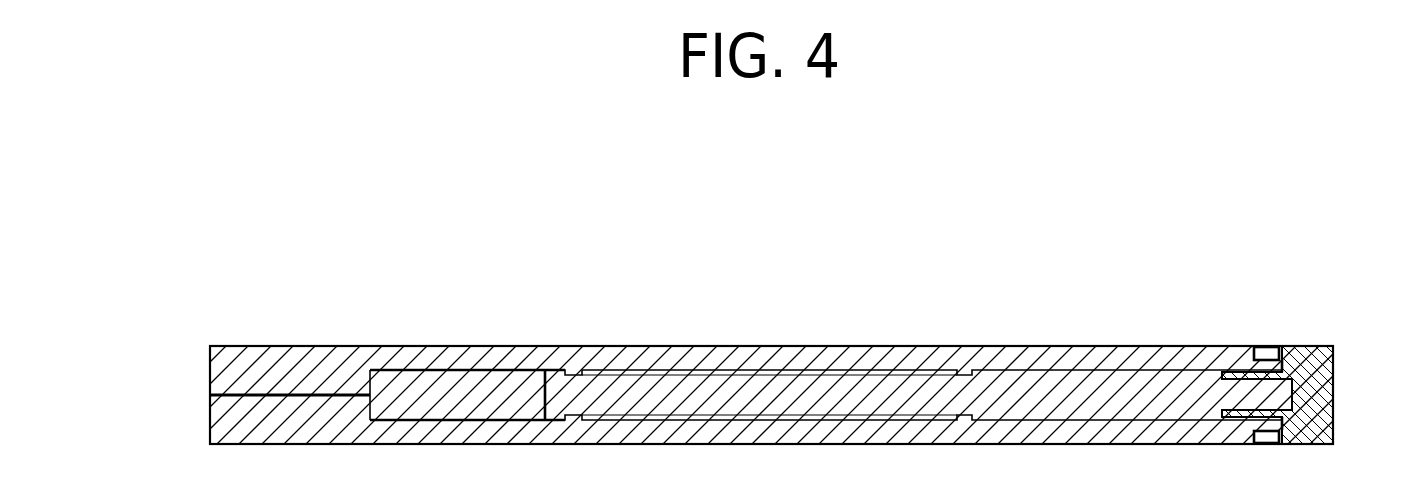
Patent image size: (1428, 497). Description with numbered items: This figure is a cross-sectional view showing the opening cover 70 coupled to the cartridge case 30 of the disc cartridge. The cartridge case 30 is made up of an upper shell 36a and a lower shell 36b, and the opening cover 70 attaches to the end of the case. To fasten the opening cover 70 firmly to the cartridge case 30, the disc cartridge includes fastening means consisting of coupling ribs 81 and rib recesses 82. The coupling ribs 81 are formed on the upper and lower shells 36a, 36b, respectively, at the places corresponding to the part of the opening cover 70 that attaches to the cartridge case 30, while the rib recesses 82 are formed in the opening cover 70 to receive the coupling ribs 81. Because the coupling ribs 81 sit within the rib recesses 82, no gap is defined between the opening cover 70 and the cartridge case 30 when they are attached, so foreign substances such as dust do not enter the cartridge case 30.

The cartridge case 30 is at (537, 348).
The upper shell 36a is at (210, 376).
The lower shell 36b is at (210, 426).
The opening cover 70 is at (1329, 398).
The coupling ribs 81 is at (1262, 353).
The rib recesses 82 is at (1284, 363).